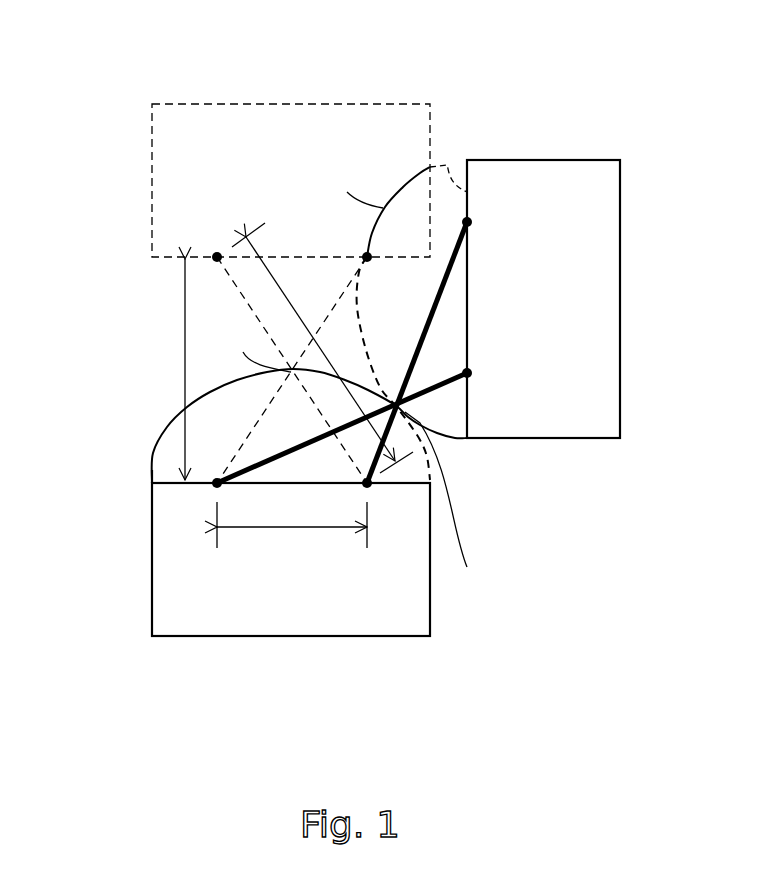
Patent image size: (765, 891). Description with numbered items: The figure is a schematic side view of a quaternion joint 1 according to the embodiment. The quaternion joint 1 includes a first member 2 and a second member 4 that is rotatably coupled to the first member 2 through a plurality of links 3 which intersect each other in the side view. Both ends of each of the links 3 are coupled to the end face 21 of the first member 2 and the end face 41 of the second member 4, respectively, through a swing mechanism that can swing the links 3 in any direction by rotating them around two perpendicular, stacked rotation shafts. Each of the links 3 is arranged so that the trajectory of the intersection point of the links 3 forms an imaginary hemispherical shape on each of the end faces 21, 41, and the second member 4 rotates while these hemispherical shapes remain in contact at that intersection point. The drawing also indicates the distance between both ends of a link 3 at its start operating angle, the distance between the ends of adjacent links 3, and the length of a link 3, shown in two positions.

The quaternion joint 1 is at (126, 173).
The first member 2 is at (292, 630).
The end face of the first member 21 is at (163, 481).
The link 3 is at (215, 280).
The second member 4 is at (369, 115).
The end face of the second member 41 is at (452, 160).